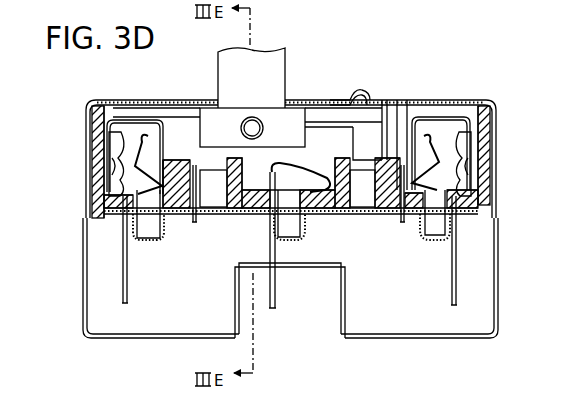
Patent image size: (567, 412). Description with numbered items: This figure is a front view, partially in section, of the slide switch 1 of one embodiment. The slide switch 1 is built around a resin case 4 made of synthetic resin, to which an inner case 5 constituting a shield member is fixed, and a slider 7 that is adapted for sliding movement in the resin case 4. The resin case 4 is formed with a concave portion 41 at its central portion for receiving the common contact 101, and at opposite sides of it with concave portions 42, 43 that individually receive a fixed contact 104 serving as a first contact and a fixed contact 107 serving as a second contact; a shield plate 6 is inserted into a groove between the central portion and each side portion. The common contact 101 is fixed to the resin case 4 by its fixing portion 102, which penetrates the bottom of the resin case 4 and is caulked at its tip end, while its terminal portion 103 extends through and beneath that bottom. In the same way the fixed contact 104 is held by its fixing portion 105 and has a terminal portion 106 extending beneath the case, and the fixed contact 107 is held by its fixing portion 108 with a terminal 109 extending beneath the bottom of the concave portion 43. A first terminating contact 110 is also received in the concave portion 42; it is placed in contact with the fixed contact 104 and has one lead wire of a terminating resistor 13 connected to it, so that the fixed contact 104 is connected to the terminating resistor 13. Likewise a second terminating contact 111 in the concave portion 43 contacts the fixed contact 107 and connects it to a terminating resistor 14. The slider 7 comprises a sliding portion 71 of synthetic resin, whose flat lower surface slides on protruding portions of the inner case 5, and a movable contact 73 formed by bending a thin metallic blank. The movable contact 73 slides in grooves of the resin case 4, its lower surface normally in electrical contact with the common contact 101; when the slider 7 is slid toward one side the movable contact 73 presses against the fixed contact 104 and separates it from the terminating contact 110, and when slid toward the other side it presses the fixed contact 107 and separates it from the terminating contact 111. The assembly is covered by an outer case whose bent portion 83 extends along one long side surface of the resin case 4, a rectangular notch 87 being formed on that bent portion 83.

The slide switch 1 is at (389, 99).
The resin case 4 is at (93, 100).
The inner case 5 is at (340, 220).
The shield plate 6 is at (197, 220).
The slider 7 is at (292, 73).
The terminating resistor 13 is at (100, 141).
The terminating resistor 14 is at (470, 150).
The concave portion 41 is at (292, 178).
The concave portion 42 is at (97, 187).
The concave portion 43 is at (450, 173).
The sliding portion 71 is at (268, 53).
The movable contact 73 is at (180, 127).
The bent portion 83 is at (403, 330).
The rectangular notch 87 is at (327, 313).
The common contact 101 is at (320, 190).
The fixing portion 102 is at (285, 240).
The terminal portion 103 is at (272, 305).
The fixed contact 104 is at (136, 138).
The fixing portion 105 is at (150, 240).
The terminal portion 106 is at (122, 300).
The fixed contact 107 is at (428, 140).
The fixing portion 108 is at (433, 232).
The terminal 109 is at (457, 300).
The terminating contact 110 is at (111, 130).
The terminating contact 111 is at (453, 117).